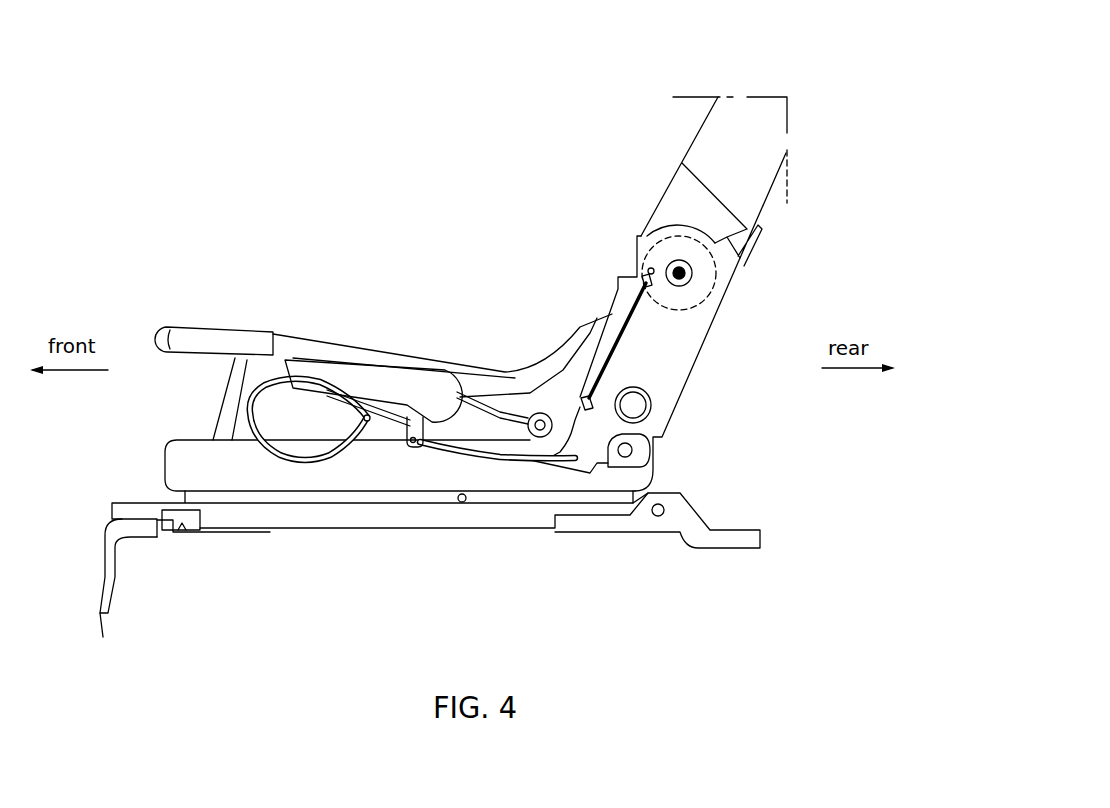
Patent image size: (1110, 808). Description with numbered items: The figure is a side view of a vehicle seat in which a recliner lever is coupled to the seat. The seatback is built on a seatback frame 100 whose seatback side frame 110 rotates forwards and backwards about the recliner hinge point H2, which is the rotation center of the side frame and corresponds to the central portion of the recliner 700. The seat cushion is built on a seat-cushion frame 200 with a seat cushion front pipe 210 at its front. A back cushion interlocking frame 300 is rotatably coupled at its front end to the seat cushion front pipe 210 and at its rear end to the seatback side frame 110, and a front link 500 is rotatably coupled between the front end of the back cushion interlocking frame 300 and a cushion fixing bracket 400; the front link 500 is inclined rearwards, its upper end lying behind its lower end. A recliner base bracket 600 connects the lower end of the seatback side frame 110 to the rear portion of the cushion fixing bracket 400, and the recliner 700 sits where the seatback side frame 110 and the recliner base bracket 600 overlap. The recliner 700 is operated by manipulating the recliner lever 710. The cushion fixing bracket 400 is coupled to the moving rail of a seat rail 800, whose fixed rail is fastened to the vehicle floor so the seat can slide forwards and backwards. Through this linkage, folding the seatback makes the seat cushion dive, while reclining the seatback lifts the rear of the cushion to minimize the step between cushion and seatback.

The seatback frame 100 is at (797, 135).
The seatback side frame 110 is at (745, 113).
The seat-cushion frame 200 is at (190, 320).
The seat cushion front pipe 210 is at (168, 340).
The back cushion interlocking frame 300 is at (508, 385).
The cushion fixing bracket 400 is at (300, 468).
The front link 500 is at (227, 410).
The recliner base bracket 600 is at (670, 382).
The recliner 700 is at (640, 262).
The recliner lever 710 is at (385, 377).
The seat rail 800 is at (385, 497).
The recliner hinge point H2 is at (677, 262).